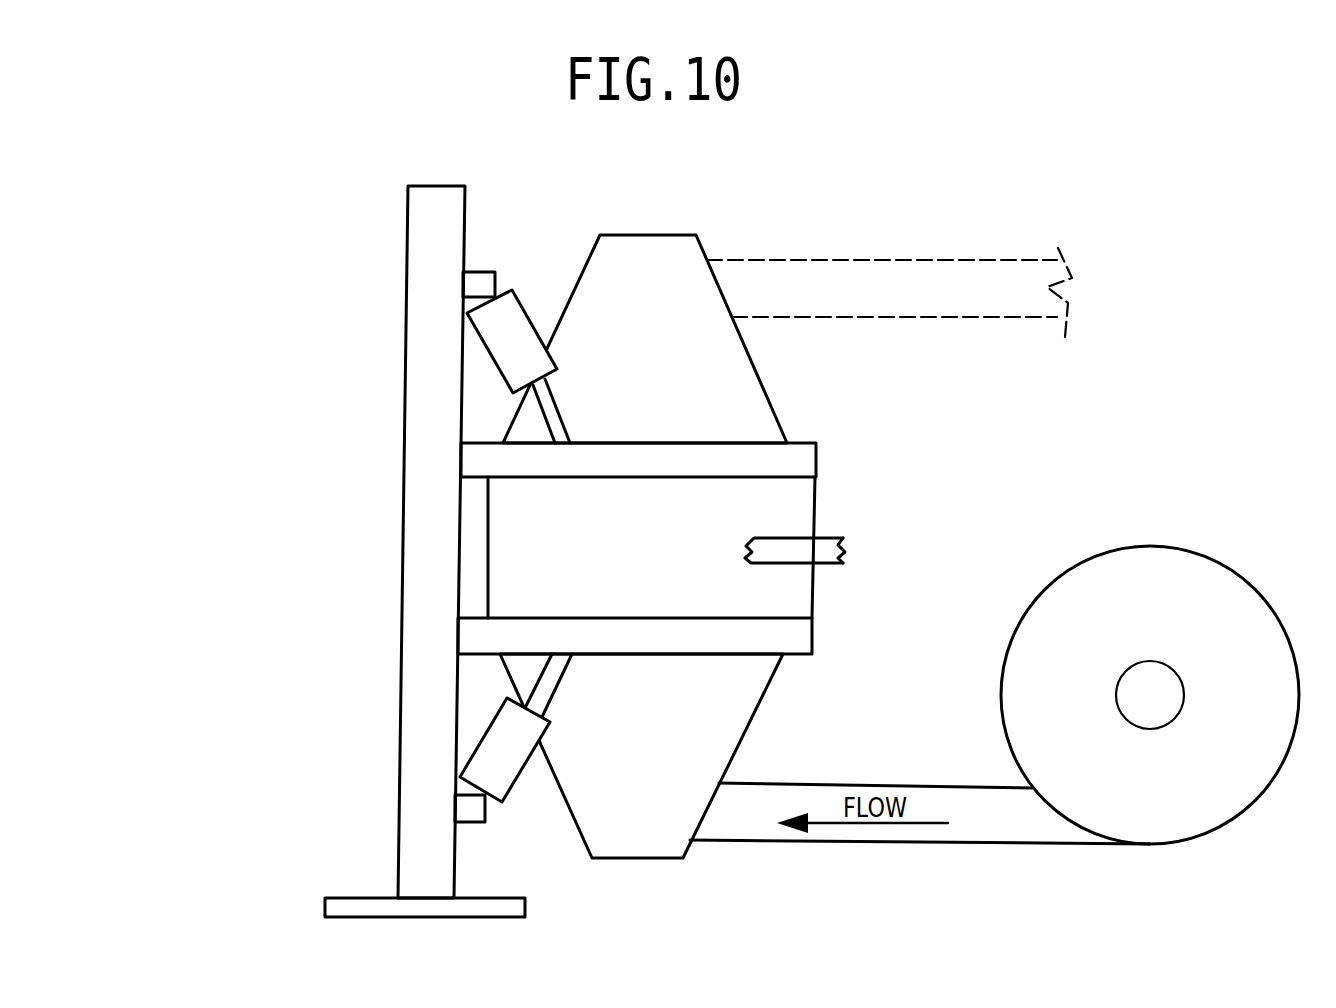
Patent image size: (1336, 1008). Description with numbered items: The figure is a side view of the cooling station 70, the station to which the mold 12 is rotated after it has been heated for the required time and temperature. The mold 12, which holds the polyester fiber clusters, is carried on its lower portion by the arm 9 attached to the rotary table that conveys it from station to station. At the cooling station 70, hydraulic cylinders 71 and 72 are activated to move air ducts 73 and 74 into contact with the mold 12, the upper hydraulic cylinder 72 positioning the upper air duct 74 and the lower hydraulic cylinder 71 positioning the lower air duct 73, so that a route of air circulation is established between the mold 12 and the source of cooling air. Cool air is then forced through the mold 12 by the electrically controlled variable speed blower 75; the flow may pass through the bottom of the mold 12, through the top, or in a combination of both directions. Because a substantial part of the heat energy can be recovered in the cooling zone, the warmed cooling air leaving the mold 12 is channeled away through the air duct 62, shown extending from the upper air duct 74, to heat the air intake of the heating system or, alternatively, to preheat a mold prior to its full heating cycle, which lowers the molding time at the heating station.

The cooling station 70 is at (332, 231).
The air duct 74 is at (662, 250).
The air duct 73 is at (665, 850).
The mold 12 is at (816, 503).
The hydraulic cylinder 72 is at (505, 302).
The hydraulic cylinder 71 is at (502, 785).
The arm 9 is at (835, 563).
The air duct 62 is at (937, 273).
The variable speed blower 75 is at (1232, 600).